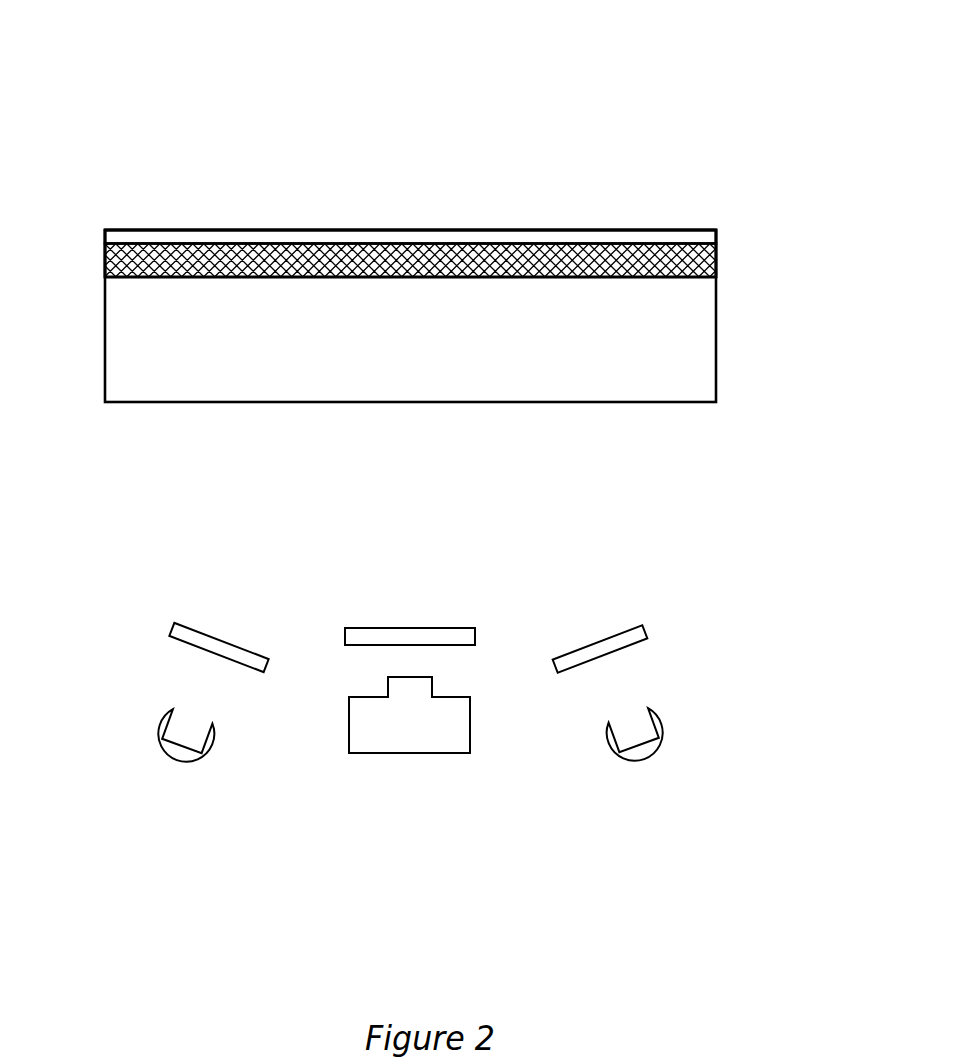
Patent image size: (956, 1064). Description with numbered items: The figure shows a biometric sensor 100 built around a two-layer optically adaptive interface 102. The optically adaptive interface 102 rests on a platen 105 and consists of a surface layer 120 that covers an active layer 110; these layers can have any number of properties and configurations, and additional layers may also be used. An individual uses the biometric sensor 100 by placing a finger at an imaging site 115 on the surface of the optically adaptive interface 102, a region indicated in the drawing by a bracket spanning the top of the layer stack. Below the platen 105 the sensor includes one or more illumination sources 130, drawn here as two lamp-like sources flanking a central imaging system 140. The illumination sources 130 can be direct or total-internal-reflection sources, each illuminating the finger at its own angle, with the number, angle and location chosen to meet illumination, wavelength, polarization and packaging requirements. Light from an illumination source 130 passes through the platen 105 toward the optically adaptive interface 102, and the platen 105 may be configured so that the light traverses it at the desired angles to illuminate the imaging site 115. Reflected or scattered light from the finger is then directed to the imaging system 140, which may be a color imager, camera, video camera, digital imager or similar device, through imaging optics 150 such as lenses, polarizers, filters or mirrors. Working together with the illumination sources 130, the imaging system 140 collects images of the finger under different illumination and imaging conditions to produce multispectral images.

The biometric sensor 100 is at (678, 46).
The optically adaptive interface 102 is at (97, 233).
The platen 105 is at (613, 369).
The active layer 110 is at (707, 259).
The imaging site 115 is at (690, 183).
The surface layer 120 is at (706, 240).
The illumination source 130 is at (180, 733).
The imaging system 140 is at (407, 745).
The imaging optics 150 is at (463, 637).